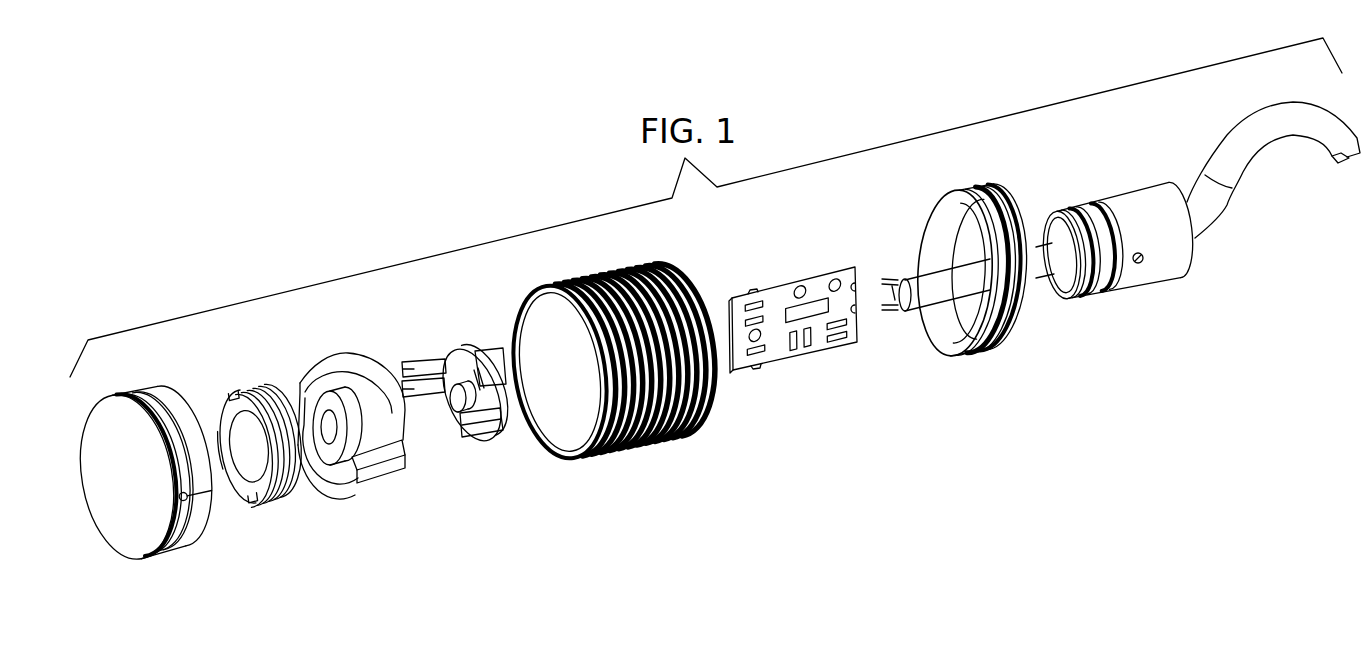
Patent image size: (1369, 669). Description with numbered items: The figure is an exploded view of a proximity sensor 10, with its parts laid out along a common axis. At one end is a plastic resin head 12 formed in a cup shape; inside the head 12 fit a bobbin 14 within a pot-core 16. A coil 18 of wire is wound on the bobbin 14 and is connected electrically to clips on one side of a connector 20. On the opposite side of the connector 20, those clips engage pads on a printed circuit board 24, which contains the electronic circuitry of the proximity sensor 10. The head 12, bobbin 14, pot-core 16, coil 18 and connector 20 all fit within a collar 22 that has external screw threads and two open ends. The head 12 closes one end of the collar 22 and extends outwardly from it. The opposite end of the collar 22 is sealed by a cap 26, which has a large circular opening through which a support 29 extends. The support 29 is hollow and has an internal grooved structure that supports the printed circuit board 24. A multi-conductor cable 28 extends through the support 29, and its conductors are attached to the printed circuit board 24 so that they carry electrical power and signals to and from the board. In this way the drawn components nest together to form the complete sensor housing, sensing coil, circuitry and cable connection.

The proximity sensor 10 is at (838, 429).
The head 12 is at (128, 390).
The bobbin 14 is at (228, 390).
The pot-core 16 is at (342, 353).
The coil 18 is at (288, 497).
The connector 20 is at (450, 356).
The collar 22 is at (577, 280).
The printed circuit board 24 is at (787, 285).
The cap 26 is at (958, 198).
The multi-conductor cable 28 is at (1230, 155).
The support 29 is at (1148, 188).